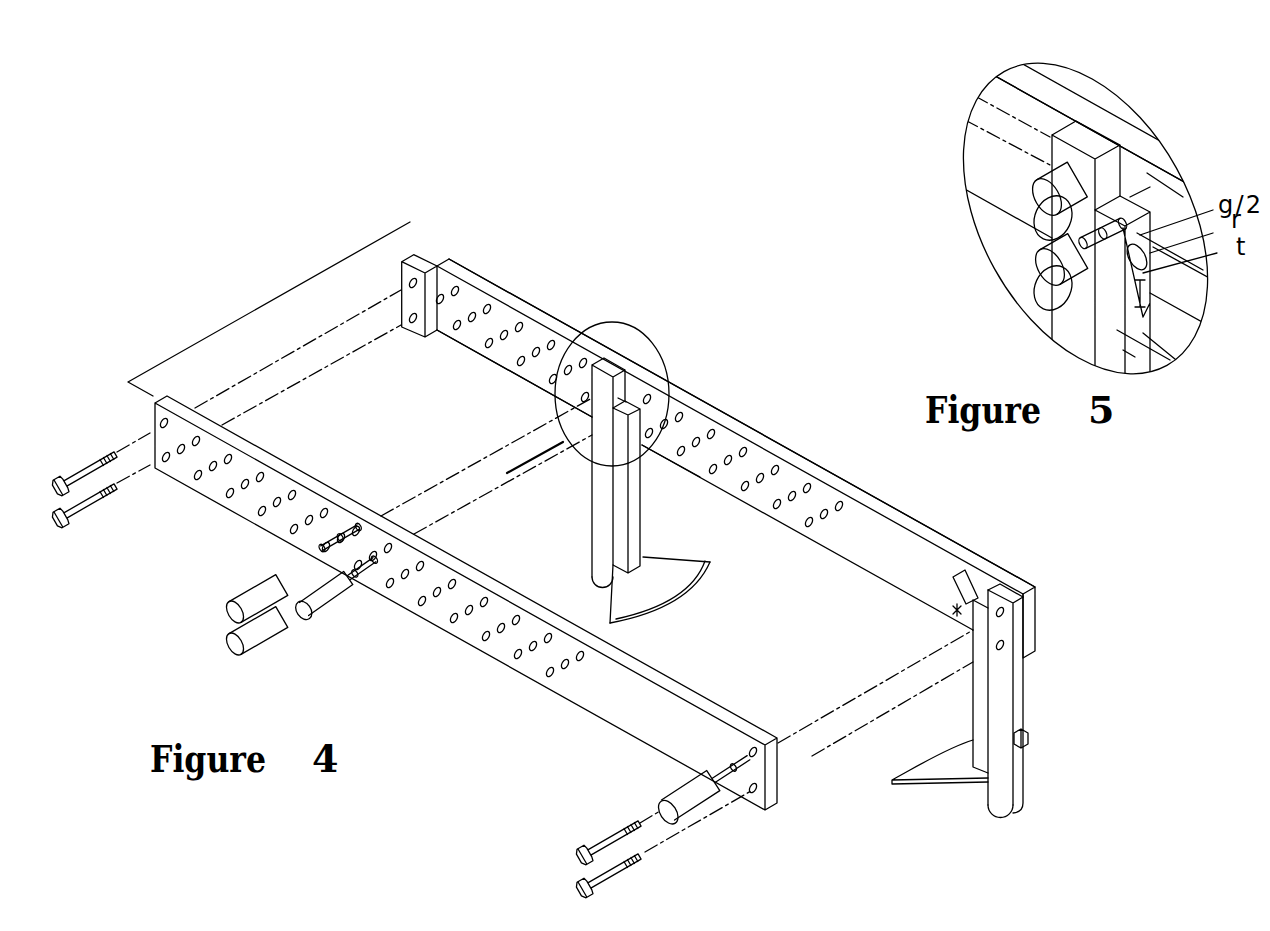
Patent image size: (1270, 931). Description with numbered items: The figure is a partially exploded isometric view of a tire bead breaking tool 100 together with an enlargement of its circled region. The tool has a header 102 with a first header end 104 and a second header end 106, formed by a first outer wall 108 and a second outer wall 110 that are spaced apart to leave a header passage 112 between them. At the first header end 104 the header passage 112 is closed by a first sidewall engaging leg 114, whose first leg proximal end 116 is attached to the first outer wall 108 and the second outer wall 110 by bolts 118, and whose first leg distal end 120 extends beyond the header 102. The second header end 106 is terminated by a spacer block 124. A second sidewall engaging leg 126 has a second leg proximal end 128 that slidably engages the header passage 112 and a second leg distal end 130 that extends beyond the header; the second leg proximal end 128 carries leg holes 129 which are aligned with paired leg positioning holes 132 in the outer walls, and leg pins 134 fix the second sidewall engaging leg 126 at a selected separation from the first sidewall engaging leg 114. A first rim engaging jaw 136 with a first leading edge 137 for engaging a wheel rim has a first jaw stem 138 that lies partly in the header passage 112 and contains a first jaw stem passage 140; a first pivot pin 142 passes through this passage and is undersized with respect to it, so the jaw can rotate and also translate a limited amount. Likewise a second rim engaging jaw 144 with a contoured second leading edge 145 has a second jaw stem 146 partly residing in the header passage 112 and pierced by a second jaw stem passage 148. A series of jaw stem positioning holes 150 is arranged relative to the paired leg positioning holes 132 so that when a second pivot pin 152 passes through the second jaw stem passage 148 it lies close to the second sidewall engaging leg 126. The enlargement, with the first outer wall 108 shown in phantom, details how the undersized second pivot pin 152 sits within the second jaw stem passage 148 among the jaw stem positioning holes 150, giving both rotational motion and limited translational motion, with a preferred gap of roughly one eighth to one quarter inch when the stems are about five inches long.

In FIG. 4, the tire bead breaking tool 100 is at (494, 716).
In FIG. 4, the header 102 is at (253, 304).
In FIG. 4, the first header end 104 is at (1027, 562).
In FIG. 4, the second header end 106 is at (715, 428).
In FIG. 4, the first outer wall 108 is at (608, 692).
In FIG. 5, the first outer wall 108 is at (1000, 125).
In FIG. 4, the second outer wall 110 is at (866, 494).
In FIG. 5, the second outer wall 110 is at (1067, 100).
In FIG. 4, the header passage 112 is at (460, 310).
In FIG. 5, the header passage 112 is at (1018, 103).
In FIG. 4, the first sidewall engaging leg 114 is at (1052, 693).
In FIG. 4, the first leg proximal end 116 is at (1017, 610).
In FIG. 4, the bolts 118 is at (603, 875).
In FIG. 4, the first leg distal end 120 is at (1017, 814).
In FIG. 4, the spacer block 124 is at (422, 262).
In FIG. 4, the second sidewall engaging leg 126 is at (565, 476).
In FIG. 5, the second sidewall engaging leg 126 is at (1072, 332).
In FIG. 4, the second leg proximal end 128 is at (602, 366).
In FIG. 5, the second leg proximal end 128 is at (1085, 143).
In FIG. 4, the leg holes 129 is at (572, 442).
In FIG. 4, the second leg distal end 130 is at (604, 578).
In FIG. 4, the paired leg positioning holes 132 is at (520, 359).
In FIG. 4, the leg pins 134 is at (245, 594).
In FIG. 4, the first rim engaging jaw 136 is at (899, 693).
In FIG. 4, the first leading edge 137 is at (942, 743).
In FIG. 4, the first jaw stem 138 is at (980, 703).
In FIG. 4, the first jaw stem passage 140 is at (971, 596).
In FIG. 4, the first pivot pin 142 is at (700, 787).
In FIG. 4, the second rim engaging jaw 144 is at (686, 577).
In FIG. 4, the second leading edge 145 is at (643, 598).
In FIG. 4, the second jaw stem 146 is at (690, 440).
In FIG. 5, the second jaw stem 146 is at (1123, 350).
In FIG. 4, the second jaw stem passage 148 is at (632, 395).
In FIG. 4, the jaw stem positioning holes 150 is at (810, 520).
In FIG. 4, the second pivot pin 152 is at (338, 582).